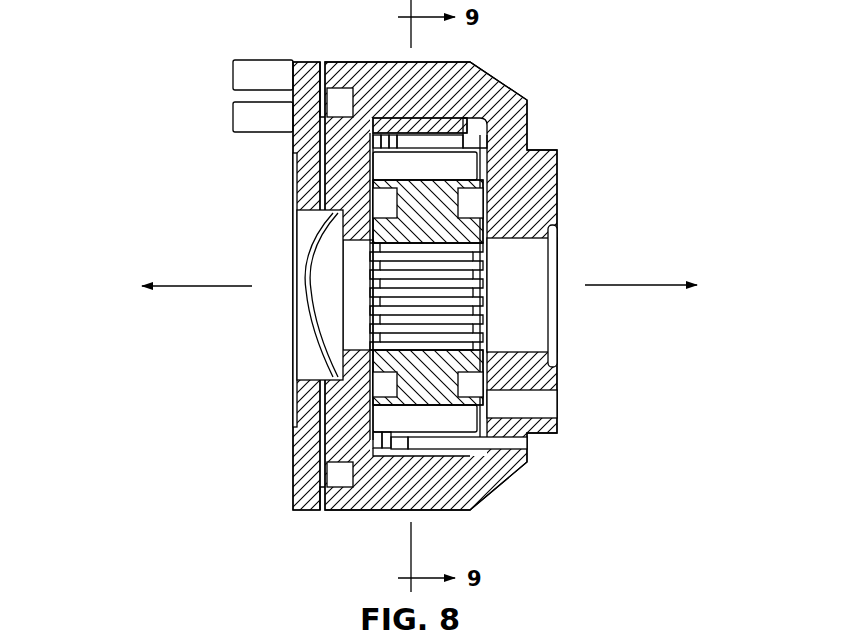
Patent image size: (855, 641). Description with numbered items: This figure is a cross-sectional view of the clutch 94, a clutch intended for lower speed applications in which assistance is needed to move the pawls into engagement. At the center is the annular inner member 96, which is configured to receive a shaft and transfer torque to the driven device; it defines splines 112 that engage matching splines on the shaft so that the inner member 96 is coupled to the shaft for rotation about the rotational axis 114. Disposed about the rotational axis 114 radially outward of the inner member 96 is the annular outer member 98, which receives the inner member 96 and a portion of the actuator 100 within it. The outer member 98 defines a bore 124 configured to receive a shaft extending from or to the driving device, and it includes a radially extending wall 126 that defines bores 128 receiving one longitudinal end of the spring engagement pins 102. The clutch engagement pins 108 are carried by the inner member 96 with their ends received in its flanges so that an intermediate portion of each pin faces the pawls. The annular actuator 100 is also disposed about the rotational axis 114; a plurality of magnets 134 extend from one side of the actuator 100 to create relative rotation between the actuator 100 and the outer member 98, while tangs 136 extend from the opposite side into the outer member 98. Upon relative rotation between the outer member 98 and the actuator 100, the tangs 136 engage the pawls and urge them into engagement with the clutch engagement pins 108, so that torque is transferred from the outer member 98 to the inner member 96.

The clutch 94 is at (232, 48).
The inner member 96 is at (434, 391).
The outer member 98 is at (494, 103).
The actuator 100 is at (299, 468).
The spring engagement pins 102 is at (432, 450).
The clutch engagement pins 108 is at (421, 162).
The splines 112 is at (463, 302).
The rotational axis 114 is at (200, 283).
The bore 124 is at (521, 318).
The radially extending wall 126 is at (484, 127).
The bores 128 is at (514, 446).
The magnets 134 is at (257, 113).
The tangs 136 is at (407, 117).